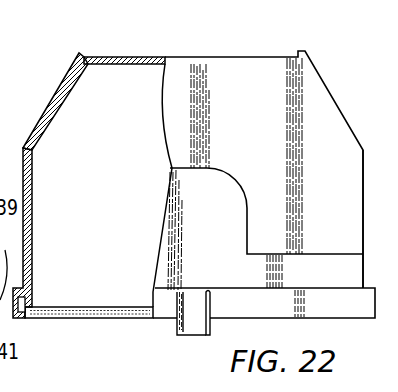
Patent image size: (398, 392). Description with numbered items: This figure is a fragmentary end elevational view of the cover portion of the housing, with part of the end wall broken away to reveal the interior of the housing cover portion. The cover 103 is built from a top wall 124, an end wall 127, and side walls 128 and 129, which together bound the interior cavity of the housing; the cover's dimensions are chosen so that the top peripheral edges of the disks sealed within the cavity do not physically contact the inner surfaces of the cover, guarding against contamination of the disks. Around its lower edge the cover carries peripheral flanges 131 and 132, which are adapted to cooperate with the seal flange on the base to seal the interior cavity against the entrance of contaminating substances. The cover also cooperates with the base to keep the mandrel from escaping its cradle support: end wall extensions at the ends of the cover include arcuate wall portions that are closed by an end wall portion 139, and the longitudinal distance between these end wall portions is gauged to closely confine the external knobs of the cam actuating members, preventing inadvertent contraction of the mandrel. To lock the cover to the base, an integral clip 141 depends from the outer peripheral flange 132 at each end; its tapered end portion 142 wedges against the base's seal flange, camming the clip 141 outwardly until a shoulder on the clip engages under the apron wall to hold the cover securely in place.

The housing 103 is at (57, 78).
The top wall 124 is at (130, 57).
The end wall 127 is at (261, 114).
The side wall 128 is at (33, 195).
The side wall 129 is at (362, 213).
The peripheral flange 131 is at (33, 305).
The outer peripheral flange 132 is at (359, 316).
The end wall portion 139 is at (223, 213).
The clip 141 is at (197, 313).
The tapered end portion 142 is at (176, 330).